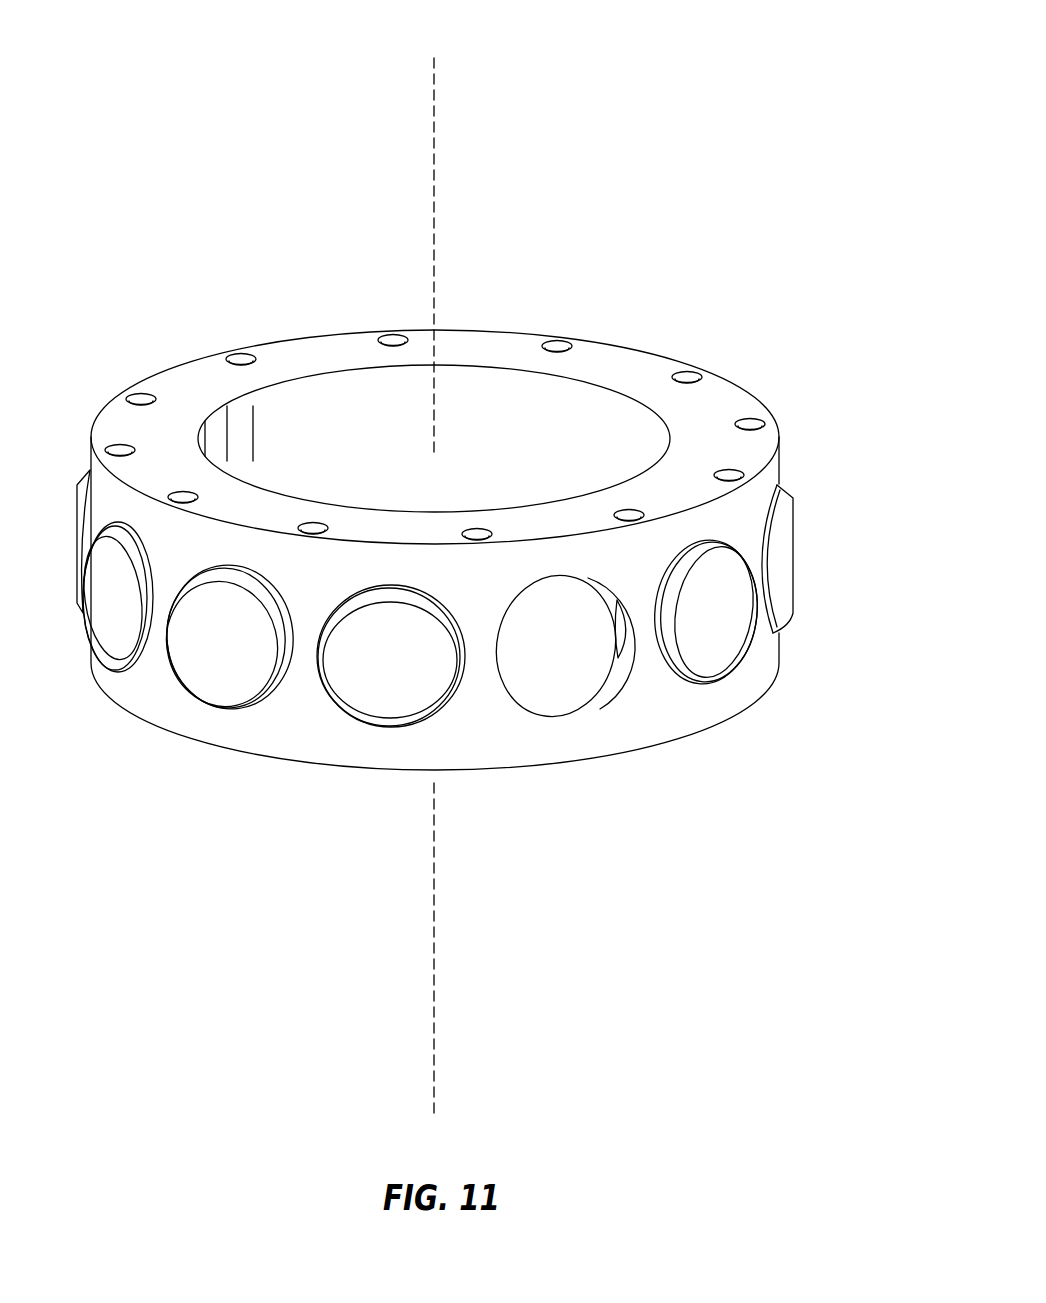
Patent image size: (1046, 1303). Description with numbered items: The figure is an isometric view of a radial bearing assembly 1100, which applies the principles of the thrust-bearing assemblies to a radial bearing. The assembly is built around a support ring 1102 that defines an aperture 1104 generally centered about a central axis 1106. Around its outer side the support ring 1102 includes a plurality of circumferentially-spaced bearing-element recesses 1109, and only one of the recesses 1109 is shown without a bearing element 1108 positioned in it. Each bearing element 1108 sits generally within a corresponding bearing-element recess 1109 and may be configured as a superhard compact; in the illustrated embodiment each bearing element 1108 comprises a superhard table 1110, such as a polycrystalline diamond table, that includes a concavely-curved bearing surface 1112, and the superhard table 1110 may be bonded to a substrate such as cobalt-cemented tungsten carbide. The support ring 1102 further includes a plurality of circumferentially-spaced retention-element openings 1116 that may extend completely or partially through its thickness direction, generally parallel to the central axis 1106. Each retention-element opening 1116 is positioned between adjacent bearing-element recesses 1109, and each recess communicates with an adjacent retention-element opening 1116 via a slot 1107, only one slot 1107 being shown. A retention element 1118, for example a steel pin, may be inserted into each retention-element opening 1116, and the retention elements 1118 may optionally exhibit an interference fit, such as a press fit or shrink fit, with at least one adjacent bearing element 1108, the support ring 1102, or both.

The radial bearing assembly 1100 is at (703, 207).
The support ring 1102 is at (489, 421).
The aperture 1104 is at (465, 494).
The central axis 1106 is at (434, 1131).
The slot 1107 is at (625, 638).
The bearing element 1108 is at (508, 598).
The bearing-element recess 1109 is at (628, 697).
The superhard table 1110 is at (777, 630).
The concavely-curved bearing surface 1112 is at (783, 598).
The retention-element opening 1116 is at (731, 343).
The retention element 1118 is at (694, 367).